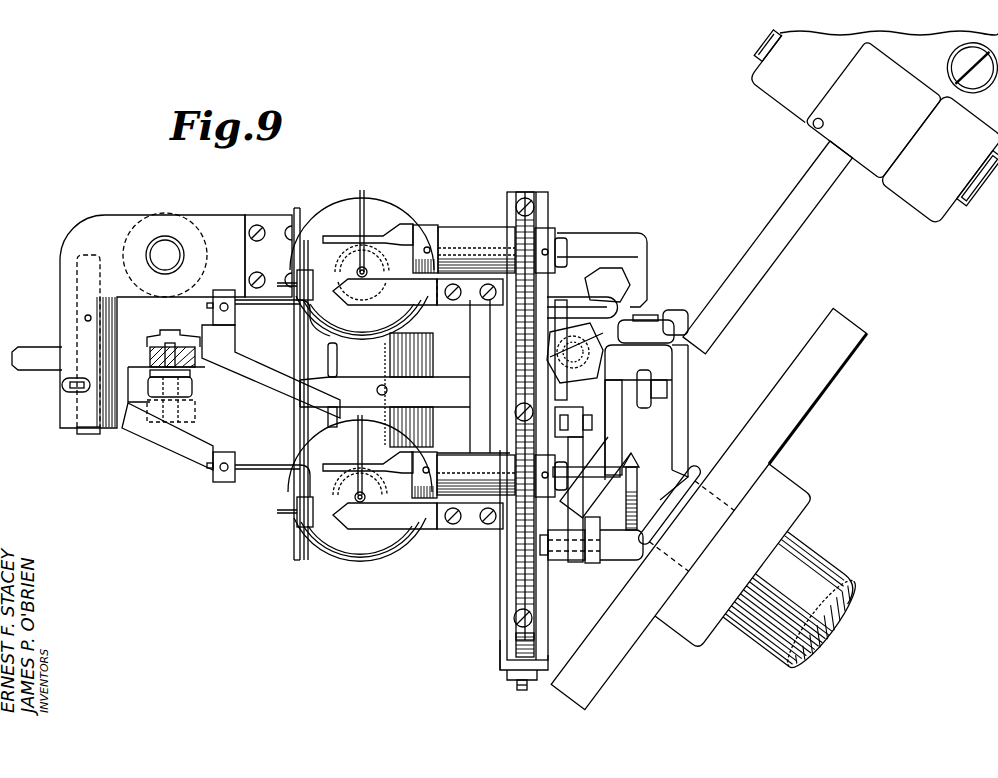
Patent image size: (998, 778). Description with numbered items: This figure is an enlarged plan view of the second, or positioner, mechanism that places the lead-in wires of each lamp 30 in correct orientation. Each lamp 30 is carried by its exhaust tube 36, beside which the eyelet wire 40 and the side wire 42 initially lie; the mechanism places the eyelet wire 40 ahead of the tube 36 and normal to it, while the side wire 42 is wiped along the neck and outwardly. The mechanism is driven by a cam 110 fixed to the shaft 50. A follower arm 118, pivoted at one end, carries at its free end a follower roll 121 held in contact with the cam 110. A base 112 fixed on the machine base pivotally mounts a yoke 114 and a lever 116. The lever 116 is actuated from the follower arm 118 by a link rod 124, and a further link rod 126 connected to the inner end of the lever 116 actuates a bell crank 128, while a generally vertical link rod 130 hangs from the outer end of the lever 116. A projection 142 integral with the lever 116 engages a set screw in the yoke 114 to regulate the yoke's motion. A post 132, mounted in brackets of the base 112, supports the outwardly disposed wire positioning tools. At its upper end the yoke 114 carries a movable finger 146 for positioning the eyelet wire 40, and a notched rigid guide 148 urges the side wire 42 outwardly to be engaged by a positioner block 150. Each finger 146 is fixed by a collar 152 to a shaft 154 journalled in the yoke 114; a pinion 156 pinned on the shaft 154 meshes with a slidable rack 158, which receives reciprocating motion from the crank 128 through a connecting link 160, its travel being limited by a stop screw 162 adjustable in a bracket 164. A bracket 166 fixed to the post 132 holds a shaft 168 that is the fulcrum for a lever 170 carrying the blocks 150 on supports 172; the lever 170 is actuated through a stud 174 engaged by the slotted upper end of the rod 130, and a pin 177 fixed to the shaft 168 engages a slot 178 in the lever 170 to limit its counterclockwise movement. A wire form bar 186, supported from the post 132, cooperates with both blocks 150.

The lamp 30 is at (304, 203).
The exhaust tube 36 is at (367, 273).
The eyelet wire 40 is at (365, 190).
The side wire 42 is at (322, 284).
The shaft 50 is at (828, 570).
The cam 110 is at (800, 414).
The base 112 is at (605, 237).
The yoke 114 is at (475, 228).
The lever 116 is at (270, 380).
The follower arm 118 is at (783, 243).
The follower roll 121 is at (696, 473).
The link rod 124 is at (647, 318).
The link rod 126 is at (653, 403).
The bell crank 128 is at (615, 492).
The link rod 130 is at (150, 392).
The post 132 is at (166, 246).
The projection 142 is at (578, 365).
The movable finger 146 is at (332, 236).
The notched rigid guide 148 is at (352, 301).
The positioner block 150 is at (300, 277).
The collar 152 is at (425, 232).
The shaft 154 is at (412, 226).
The pinion 156 is at (530, 232).
The rack 158 is at (520, 345).
The connecting link 160 is at (578, 553).
The stop screw 162 is at (518, 690).
The bracket 164 is at (500, 662).
The bracket 166 is at (111, 220).
The shaft 168 is at (85, 434).
The lever 170 is at (173, 438).
The support 172 is at (248, 308).
The stud 174 is at (173, 343).
The pin 177 is at (62, 384).
The slot 178 is at (67, 392).
The wire form bar 186 is at (294, 566).